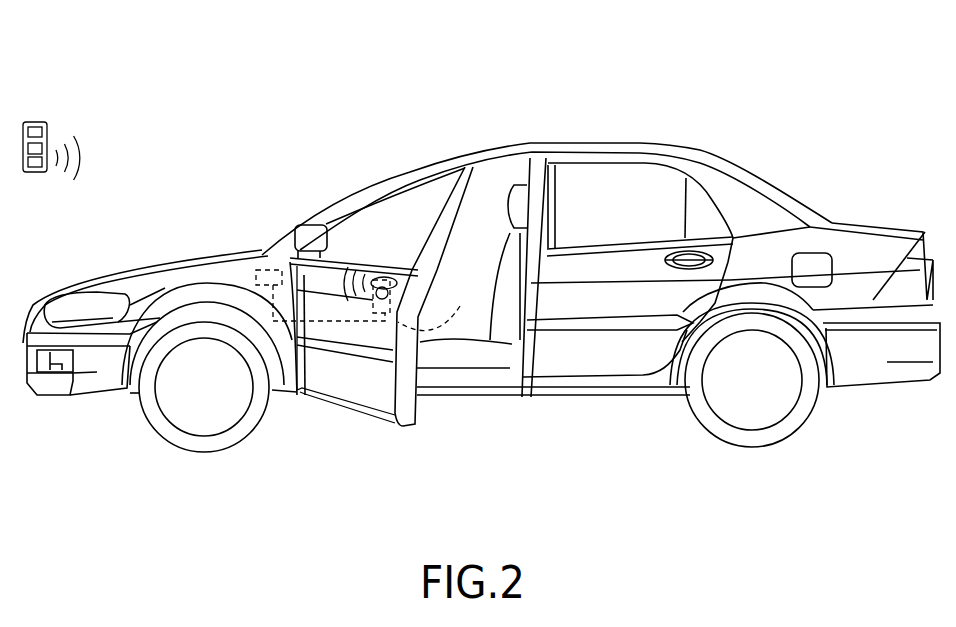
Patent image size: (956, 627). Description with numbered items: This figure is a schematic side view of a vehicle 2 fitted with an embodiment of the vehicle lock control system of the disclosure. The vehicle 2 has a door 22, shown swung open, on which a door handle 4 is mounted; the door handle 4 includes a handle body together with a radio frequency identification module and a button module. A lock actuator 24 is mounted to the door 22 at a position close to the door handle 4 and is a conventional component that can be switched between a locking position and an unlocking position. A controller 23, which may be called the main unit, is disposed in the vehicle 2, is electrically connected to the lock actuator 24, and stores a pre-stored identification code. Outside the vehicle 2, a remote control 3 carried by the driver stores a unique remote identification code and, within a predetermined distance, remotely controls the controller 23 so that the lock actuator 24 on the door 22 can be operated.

The vehicle 2 is at (596, 131).
The remote control 3 is at (47, 125).
The door handle 4 is at (388, 277).
The door 22 is at (353, 396).
The controller 23 is at (260, 266).
The lock actuator 24 is at (436, 306).